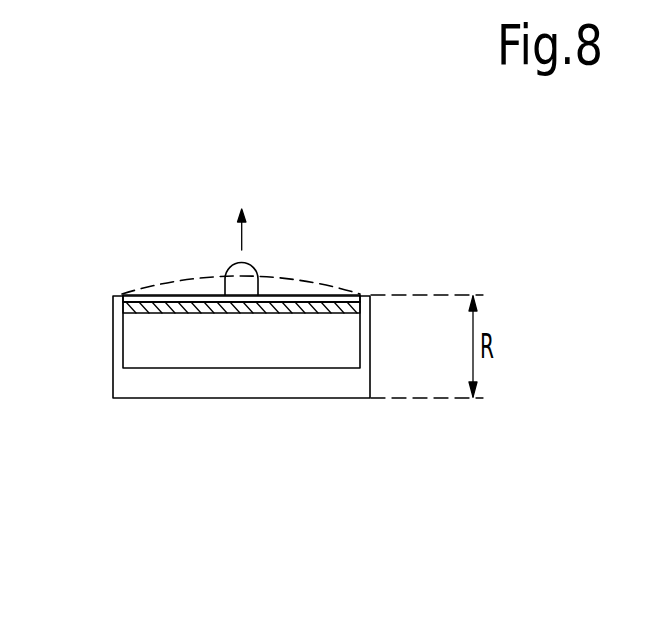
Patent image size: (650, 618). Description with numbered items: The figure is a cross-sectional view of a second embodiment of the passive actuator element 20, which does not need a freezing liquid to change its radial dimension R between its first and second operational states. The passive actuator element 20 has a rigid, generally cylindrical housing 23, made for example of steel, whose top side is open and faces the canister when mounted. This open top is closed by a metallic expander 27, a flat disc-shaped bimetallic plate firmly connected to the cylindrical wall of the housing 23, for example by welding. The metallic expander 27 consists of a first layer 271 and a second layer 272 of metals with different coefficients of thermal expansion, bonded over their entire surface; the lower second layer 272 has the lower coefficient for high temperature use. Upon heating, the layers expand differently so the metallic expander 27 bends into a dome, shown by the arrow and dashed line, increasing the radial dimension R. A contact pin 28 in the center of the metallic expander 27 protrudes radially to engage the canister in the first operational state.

The passive actuator element 20 is at (467, 203).
The housing 23 is at (270, 385).
The metallic expander 27 is at (183, 278).
The first layer 271 is at (147, 292).
The second layer 272 is at (157, 308).
The contact pin 28 is at (253, 267).